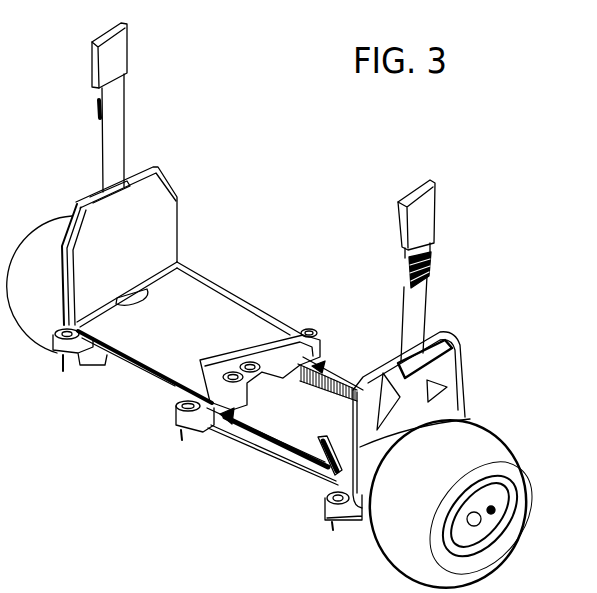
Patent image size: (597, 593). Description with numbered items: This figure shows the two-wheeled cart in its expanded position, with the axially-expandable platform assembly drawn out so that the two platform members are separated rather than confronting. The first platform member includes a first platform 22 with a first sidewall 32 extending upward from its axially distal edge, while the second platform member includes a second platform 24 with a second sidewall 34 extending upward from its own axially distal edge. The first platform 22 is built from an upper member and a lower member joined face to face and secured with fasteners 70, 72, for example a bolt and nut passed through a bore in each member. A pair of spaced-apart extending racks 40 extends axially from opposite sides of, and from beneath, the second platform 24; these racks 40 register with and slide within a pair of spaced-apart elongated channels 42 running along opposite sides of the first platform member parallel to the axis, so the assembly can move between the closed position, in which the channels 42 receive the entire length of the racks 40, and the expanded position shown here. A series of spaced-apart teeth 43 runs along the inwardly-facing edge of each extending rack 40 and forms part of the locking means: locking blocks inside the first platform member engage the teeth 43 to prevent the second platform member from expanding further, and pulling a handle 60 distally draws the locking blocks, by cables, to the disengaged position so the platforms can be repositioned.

The first platform 22 is at (190, 295).
The second platform 24 is at (343, 440).
The first sidewall 32 is at (158, 212).
The second sidewall 34 is at (440, 408).
The extending racks 40 is at (340, 383).
The elongated channels 42 is at (228, 417).
The teeth 43 is at (470, 420).
The handle 60 is at (152, 589).
The fastener 70 is at (178, 432).
The fastener 72 is at (250, 362).